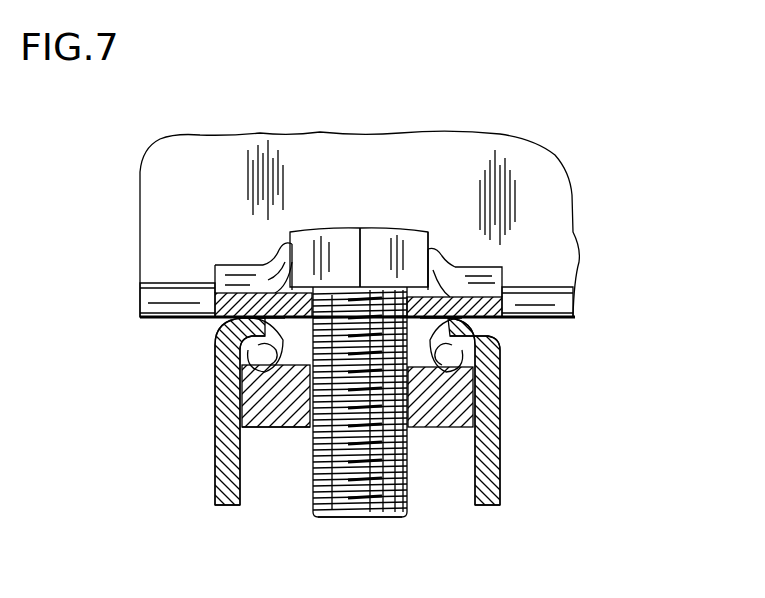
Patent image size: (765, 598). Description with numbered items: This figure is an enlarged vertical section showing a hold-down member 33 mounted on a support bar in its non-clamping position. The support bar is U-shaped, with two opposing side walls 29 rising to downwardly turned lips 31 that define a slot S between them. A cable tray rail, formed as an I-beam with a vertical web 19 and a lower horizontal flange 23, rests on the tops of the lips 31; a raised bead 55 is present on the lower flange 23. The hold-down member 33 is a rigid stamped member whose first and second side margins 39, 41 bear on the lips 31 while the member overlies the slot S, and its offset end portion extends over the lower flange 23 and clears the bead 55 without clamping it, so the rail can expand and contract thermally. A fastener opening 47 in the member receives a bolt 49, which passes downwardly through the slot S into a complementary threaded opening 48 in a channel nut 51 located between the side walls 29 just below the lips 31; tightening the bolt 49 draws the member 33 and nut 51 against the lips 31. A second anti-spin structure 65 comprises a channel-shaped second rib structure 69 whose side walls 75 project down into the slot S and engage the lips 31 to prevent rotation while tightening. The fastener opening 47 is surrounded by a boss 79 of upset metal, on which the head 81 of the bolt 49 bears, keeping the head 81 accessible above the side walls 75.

The vertical web 19 is at (542, 202).
The lower horizontal flange 23 is at (165, 297).
The side wall 29 is at (215, 495).
The downwardly turned lip 31 is at (240, 347).
The hold-down member 33 is at (266, 248).
The first side margin 39 is at (263, 266).
The second side margin 41 is at (447, 258).
The fastener opening 47 is at (310, 388).
The complementary opening 48 is at (345, 415).
The bolt 49 is at (388, 518).
The channel nut 51 is at (283, 427).
The bead 55 is at (543, 300).
The second anti-spin structure 65 is at (423, 345).
The second rib structure 69 is at (303, 292).
The side wall 75 is at (290, 275).
The boss 79 is at (430, 255).
The head 81 is at (380, 230).
The slot S is at (230, 377).